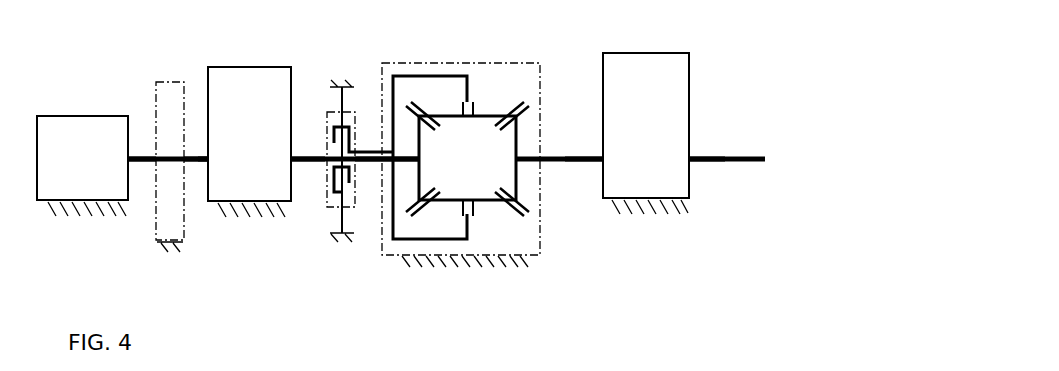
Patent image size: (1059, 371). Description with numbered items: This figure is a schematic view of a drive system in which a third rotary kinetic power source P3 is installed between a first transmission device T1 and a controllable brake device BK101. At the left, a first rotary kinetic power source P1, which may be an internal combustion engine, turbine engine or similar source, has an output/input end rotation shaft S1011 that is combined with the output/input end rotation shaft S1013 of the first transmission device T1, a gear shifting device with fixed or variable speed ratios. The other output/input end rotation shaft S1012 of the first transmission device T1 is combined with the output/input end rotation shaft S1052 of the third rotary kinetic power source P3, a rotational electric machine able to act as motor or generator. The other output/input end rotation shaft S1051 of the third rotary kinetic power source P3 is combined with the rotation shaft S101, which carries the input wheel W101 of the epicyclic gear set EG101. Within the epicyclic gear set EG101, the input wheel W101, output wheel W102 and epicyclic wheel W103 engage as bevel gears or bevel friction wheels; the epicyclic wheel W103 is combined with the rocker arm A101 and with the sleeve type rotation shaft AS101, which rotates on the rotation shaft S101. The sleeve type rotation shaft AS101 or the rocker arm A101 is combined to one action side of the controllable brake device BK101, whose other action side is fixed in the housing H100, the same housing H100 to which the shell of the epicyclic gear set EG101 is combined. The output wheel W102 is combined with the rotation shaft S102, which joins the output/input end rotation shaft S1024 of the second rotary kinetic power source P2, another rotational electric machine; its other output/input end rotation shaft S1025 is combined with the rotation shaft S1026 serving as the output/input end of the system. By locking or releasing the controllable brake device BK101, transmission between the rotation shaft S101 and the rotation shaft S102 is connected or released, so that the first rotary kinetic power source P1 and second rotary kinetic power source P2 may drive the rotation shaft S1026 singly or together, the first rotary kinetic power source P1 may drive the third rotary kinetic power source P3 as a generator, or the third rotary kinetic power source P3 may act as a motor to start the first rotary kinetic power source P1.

The first rotary kinetic power source P1 is at (82, 166).
The second rotary kinetic power source P2 is at (646, 133).
The third rotary kinetic power source P3 is at (249, 142).
The first transmission device T1 is at (172, 82).
The output/input end rotation shaft S1011 is at (140, 153).
The output/input end rotation shaft S1012 is at (187, 163).
The output/input end rotation shaft S1013 is at (153, 163).
The rotation shaft S101 is at (310, 156).
The output/input end rotation shaft S1051 is at (295, 163).
The output/input end rotation shaft S1052 is at (208, 157).
The sleeve type rotation shaft AS101 is at (368, 166).
The controllable brake device BK101 is at (328, 125).
The housing H100 is at (333, 233).
The epicyclic gear set EG101 is at (449, 127).
The rocker arm A101 is at (410, 75).
The input wheel W101 is at (450, 160).
The output wheel W102 is at (515, 142).
The epicyclic wheel W103 is at (505, 161).
The rotation shaft S102 is at (557, 155).
The output/input end rotation shaft S1024 is at (602, 161).
The output/input end rotation shaft S1025 is at (690, 161).
The rotation shaft S1026 is at (733, 154).